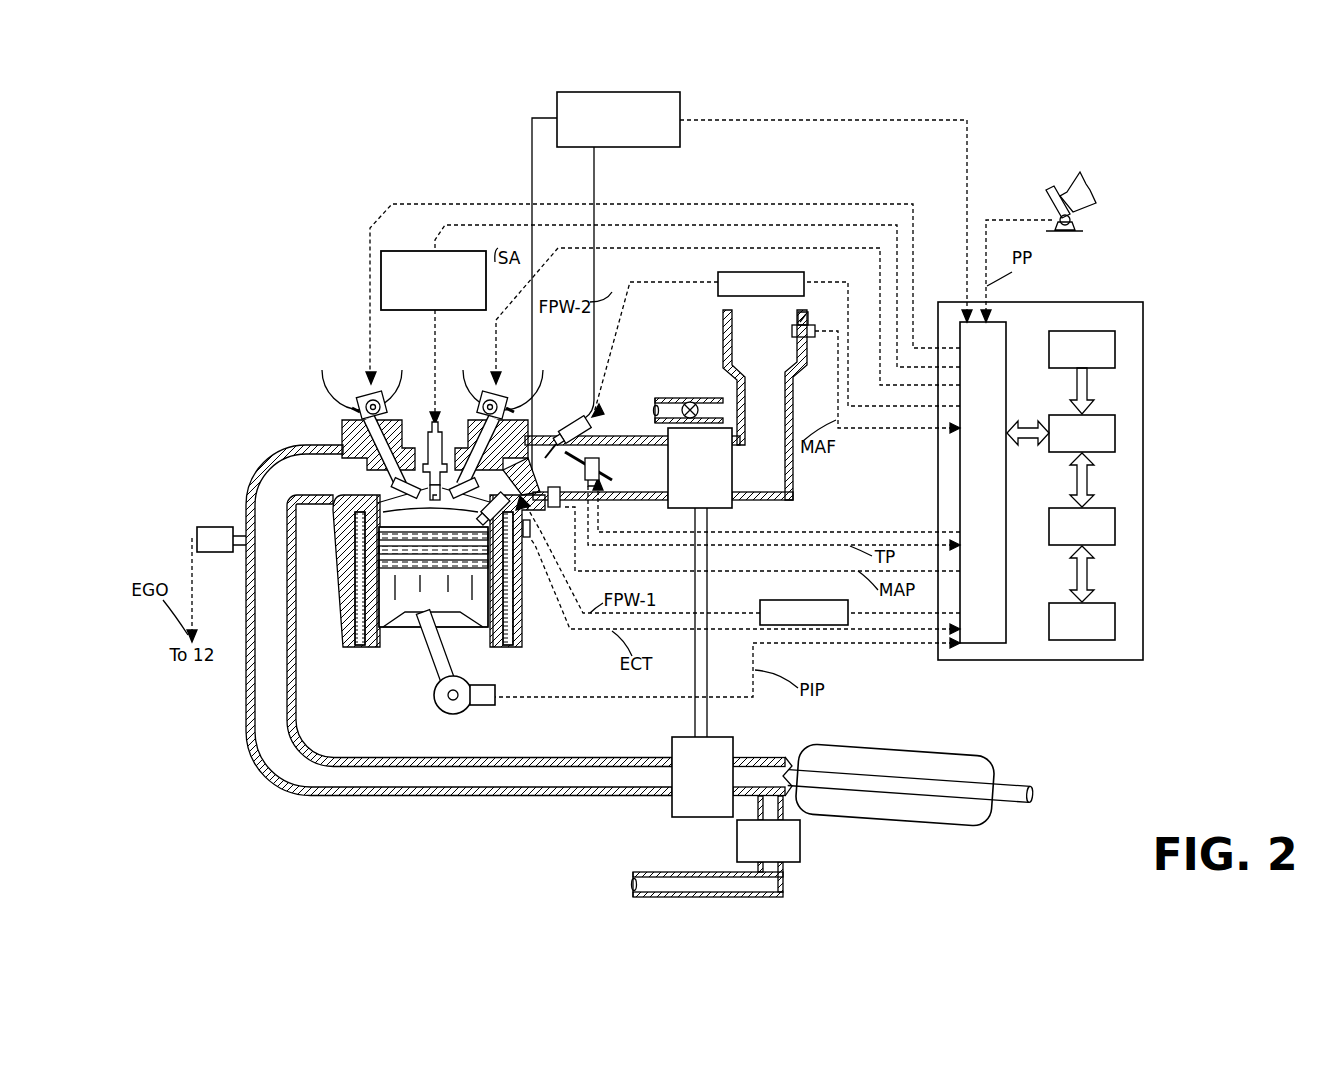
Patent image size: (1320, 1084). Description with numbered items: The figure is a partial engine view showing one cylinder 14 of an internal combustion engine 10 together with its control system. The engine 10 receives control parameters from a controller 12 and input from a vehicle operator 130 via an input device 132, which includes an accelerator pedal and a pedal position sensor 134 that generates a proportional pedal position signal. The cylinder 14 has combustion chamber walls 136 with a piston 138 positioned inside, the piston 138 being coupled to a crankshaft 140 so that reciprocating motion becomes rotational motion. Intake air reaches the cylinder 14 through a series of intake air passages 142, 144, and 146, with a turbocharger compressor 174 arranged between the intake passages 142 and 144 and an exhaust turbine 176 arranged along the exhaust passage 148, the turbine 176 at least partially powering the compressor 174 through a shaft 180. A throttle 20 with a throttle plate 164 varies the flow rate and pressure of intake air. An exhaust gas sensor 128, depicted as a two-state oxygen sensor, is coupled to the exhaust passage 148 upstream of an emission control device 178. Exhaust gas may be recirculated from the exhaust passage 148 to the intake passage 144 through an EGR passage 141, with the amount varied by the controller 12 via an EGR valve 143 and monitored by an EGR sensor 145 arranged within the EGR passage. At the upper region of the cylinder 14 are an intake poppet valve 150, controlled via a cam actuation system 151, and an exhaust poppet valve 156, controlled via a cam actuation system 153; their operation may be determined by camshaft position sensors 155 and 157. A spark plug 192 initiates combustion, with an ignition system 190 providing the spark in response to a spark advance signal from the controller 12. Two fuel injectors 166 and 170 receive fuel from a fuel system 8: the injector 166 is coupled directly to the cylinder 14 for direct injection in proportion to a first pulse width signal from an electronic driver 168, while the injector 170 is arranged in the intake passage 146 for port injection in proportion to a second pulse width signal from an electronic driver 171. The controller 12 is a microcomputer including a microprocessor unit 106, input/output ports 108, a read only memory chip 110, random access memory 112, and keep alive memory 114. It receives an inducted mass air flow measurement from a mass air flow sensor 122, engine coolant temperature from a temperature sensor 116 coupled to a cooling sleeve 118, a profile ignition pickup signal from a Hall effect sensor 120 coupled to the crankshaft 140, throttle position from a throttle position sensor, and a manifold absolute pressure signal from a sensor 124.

The fuel system 8 is at (618, 119).
The internal combustion engine 10 is at (296, 286).
The controller 12 is at (1145, 304).
The cylinder 14 is at (380, 512).
The throttle 20 is at (594, 458).
The microprocessor unit 106 is at (1116, 434).
The input/output ports 108 is at (1008, 326).
The read only memory chip 110 is at (1116, 350).
The random access memory 112 is at (1116, 528).
The keep alive memory 114 is at (1116, 622).
The temperature sensor 116 is at (533, 545).
The cooling sleeve 118 is at (515, 645).
The Hall effect sensor 120 is at (490, 706).
The mass air flow sensor 122 is at (805, 325).
The manifold absolute pressure sensor 124 is at (562, 510).
The exhaust gas sensor 128 is at (197, 533).
The vehicle operator 130 is at (1095, 188).
The input device 132 is at (1047, 198).
The pedal position sensor 134 is at (1076, 220).
The combustion chamber walls 136 is at (378, 650).
The piston 138 is at (418, 605).
The crankshaft 140 is at (445, 712).
The EGR passage 141 is at (680, 400).
The intake air passage 142 is at (765, 405).
The EGR valve 143 is at (693, 404).
The intake air passage 144 is at (659, 468).
The EGR sensor 145 is at (800, 848).
The intake air passage 146 is at (534, 475).
The exhaust passage 148 is at (519, 620).
The intake poppet valve 150 is at (475, 450).
The cam actuation system 151 is at (490, 392).
The cam actuation system 153 is at (380, 392).
The camshaft position sensor 155 is at (512, 397).
The exhaust poppet valve 156 is at (354, 409).
The camshaft position sensor 157 is at (358, 398).
The throttle plate 164 is at (556, 440).
The fuel injector 166 is at (497, 502).
The electronic driver 168 is at (760, 606).
The fuel injector 170 is at (576, 420).
The electronic driver 171 is at (718, 282).
The compressor 174 is at (733, 505).
The exhaust turbine 176 is at (672, 808).
The emission control device 178 is at (890, 748).
The shaft 180 is at (708, 705).
The ignition system 190 is at (392, 251).
The spark plug 192 is at (430, 440).